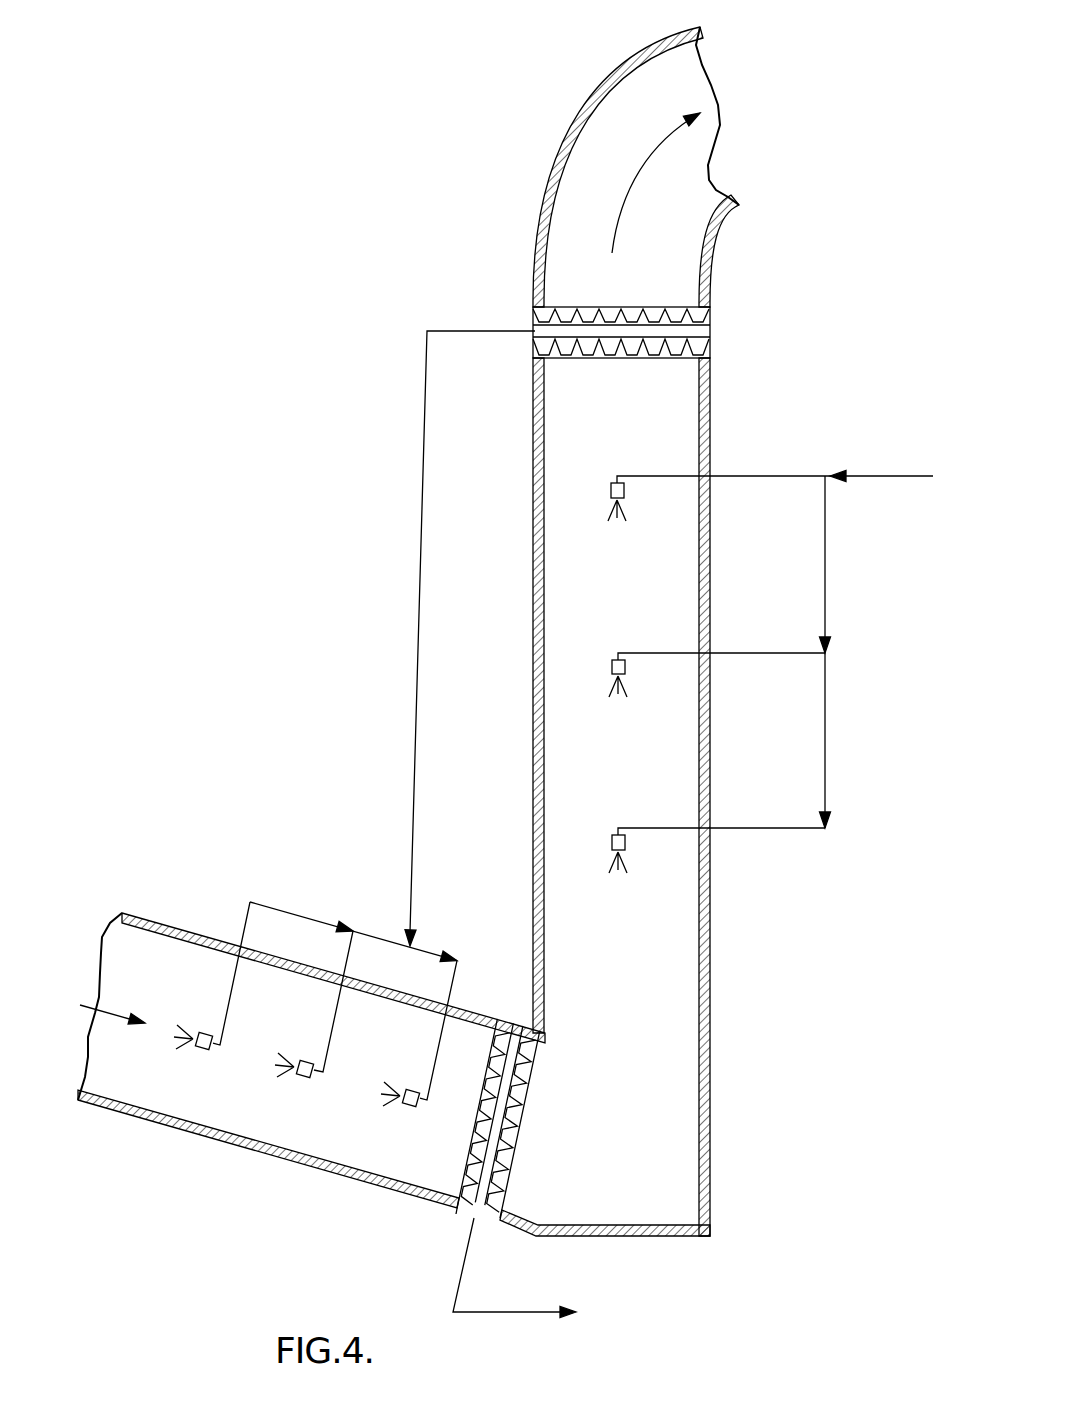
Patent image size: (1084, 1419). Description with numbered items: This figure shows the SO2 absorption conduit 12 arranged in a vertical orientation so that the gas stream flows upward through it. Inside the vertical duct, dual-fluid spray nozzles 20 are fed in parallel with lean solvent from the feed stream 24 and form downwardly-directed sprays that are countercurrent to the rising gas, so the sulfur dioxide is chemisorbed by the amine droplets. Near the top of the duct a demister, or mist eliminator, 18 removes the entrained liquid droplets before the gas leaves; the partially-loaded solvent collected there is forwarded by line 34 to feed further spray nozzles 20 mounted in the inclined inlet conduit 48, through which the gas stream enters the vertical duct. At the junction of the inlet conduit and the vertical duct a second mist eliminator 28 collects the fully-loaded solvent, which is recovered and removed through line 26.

The duct 12 is at (710, 427).
The demister 18 is at (712, 332).
The dual-fluid spray nozzles 20 is at (612, 664).
The feed stream 24 is at (882, 476).
The line 26 is at (535, 1312).
The mist eliminator 28 is at (522, 1148).
The line 34 is at (425, 712).
The inlet conduit 48 is at (308, 1168).